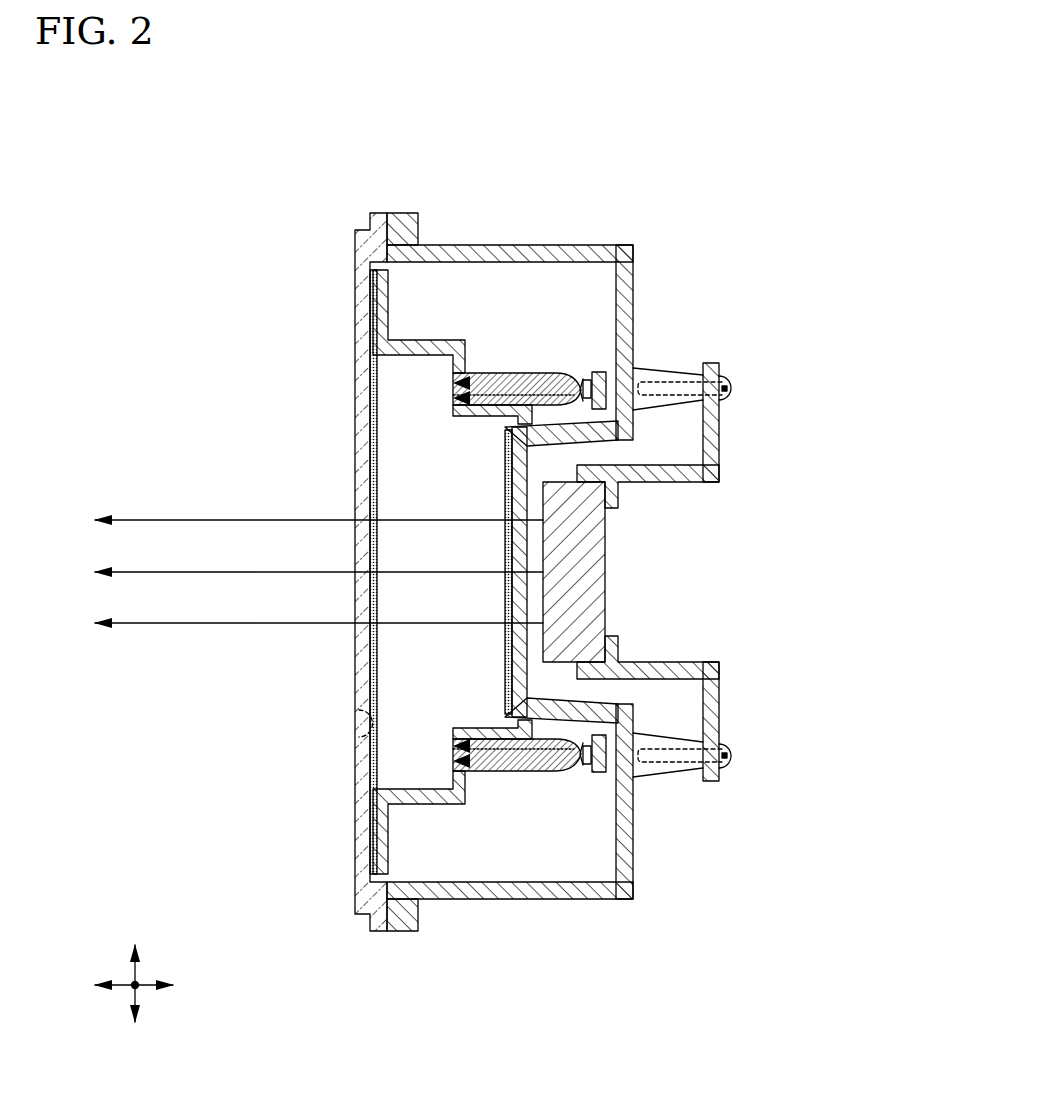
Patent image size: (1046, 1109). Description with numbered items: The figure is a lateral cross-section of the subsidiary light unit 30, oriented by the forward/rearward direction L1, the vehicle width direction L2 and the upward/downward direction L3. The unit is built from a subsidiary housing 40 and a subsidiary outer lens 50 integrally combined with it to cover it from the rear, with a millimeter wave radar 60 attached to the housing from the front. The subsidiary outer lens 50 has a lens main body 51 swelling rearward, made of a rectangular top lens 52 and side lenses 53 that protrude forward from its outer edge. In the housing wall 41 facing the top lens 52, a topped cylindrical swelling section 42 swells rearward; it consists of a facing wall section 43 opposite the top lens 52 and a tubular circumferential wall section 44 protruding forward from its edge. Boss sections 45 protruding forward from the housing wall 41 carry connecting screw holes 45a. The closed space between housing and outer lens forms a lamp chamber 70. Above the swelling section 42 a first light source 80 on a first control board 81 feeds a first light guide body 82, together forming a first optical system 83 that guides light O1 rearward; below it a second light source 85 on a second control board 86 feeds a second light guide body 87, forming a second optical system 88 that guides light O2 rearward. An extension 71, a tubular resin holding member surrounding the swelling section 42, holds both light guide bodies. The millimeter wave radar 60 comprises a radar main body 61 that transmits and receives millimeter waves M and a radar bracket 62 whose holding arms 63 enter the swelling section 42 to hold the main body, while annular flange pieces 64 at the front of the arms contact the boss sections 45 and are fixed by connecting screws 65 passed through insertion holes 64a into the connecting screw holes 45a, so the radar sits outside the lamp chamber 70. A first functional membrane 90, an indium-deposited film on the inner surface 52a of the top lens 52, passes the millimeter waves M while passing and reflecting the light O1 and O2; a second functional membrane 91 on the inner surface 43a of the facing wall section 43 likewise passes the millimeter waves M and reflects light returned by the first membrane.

The subsidiary light unit 30 is at (655, 158).
The subsidiary housing 40 is at (491, 242).
The housing wall 41 is at (631, 296).
The swelling section 42 is at (616, 562).
The facing wall section 43 is at (530, 470).
The inner surface of the facing wall section 43a is at (505, 473).
The circumferential wall section 44 is at (600, 440).
The boss sections 45 is at (650, 368).
The connecting screw holes 45a is at (680, 375).
The subsidiary outer lens 50 is at (286, 572).
The lens main body 51 is at (345, 877).
The top lens 52 is at (368, 776).
The inner surface of the top lens 52a is at (357, 722).
The side lenses 53 is at (393, 235).
The millimeter wave radar 60 is at (715, 574).
The radar main body 61 is at (605, 548).
The radar bracket 62 is at (724, 479).
The holding arms 63 is at (660, 475).
The flange pieces 64 is at (728, 754).
The insertion holes 64a is at (731, 389).
The connecting screws 65 is at (735, 378).
The lamp chamber 70 is at (500, 278).
The extension 71 is at (424, 338).
The first light source 80 is at (586, 379).
The first control board 81 is at (599, 372).
The first light guide body 82 is at (540, 372).
The first optical system 83 is at (540, 271).
The second light source 85 is at (586, 766).
The second control board 86 is at (599, 774).
The second light guide body 87 is at (540, 773).
The second optical system 88 is at (540, 874).
The first functional membrane 90 is at (377, 690).
The second functional membrane 91 is at (507, 642).
The light emitted from the first light source O1 is at (530, 395).
The light emitted from the second light source O2 is at (530, 772).
The millimeter waves M is at (115, 520).
The forward/rearward direction L1 is at (115, 987).
The vehicle width direction L2 is at (140, 992).
The upward/downward direction L3 is at (136, 963).